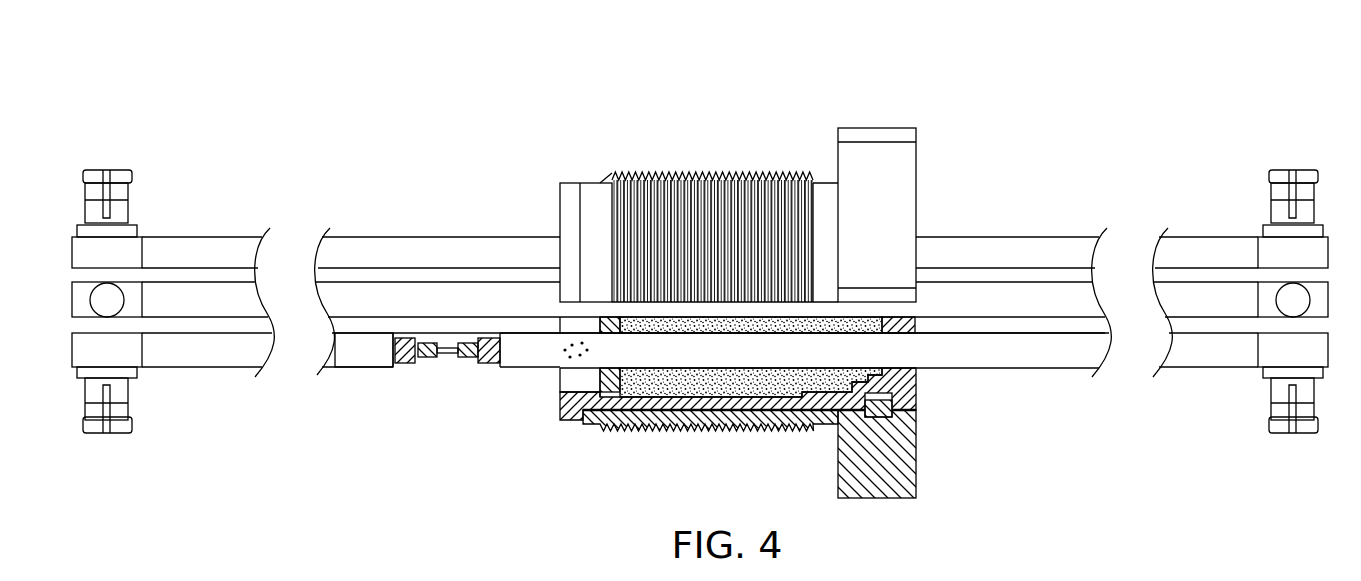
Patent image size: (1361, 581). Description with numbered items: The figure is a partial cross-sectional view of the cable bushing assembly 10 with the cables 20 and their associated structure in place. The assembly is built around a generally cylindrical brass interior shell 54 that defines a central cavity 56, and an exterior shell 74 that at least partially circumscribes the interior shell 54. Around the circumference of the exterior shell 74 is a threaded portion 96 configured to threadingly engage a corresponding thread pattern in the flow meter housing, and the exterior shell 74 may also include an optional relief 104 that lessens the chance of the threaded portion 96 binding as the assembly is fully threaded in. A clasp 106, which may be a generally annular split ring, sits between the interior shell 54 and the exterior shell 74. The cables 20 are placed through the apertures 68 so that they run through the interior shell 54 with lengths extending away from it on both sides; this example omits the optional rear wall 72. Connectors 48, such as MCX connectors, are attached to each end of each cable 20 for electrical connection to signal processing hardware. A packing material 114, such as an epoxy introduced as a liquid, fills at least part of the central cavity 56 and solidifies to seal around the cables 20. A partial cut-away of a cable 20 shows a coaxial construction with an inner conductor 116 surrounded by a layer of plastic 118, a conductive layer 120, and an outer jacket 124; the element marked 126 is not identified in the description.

The cable bushing assembly 10 is at (773, 88).
The cable 20 is at (228, 237).
The connector 48 is at (120, 170).
The interior shell 54 is at (916, 388).
The central cavity 56 is at (555, 373).
The aperture 68 is at (920, 377).
The rear wall 72 is at (598, 380).
The exterior shell 74 is at (878, 498).
The threaded portion 96 is at (643, 172).
The relief 104 is at (827, 171).
The clasp 106 is at (895, 418).
The packing material 114 is at (660, 378).
The inner conductor 116 is at (457, 353).
The layer of plastic 118 is at (423, 358).
The conductive layer 120 is at (402, 365).
The outer jacket 124 is at (348, 370).
The cavity 126 is at (567, 362).